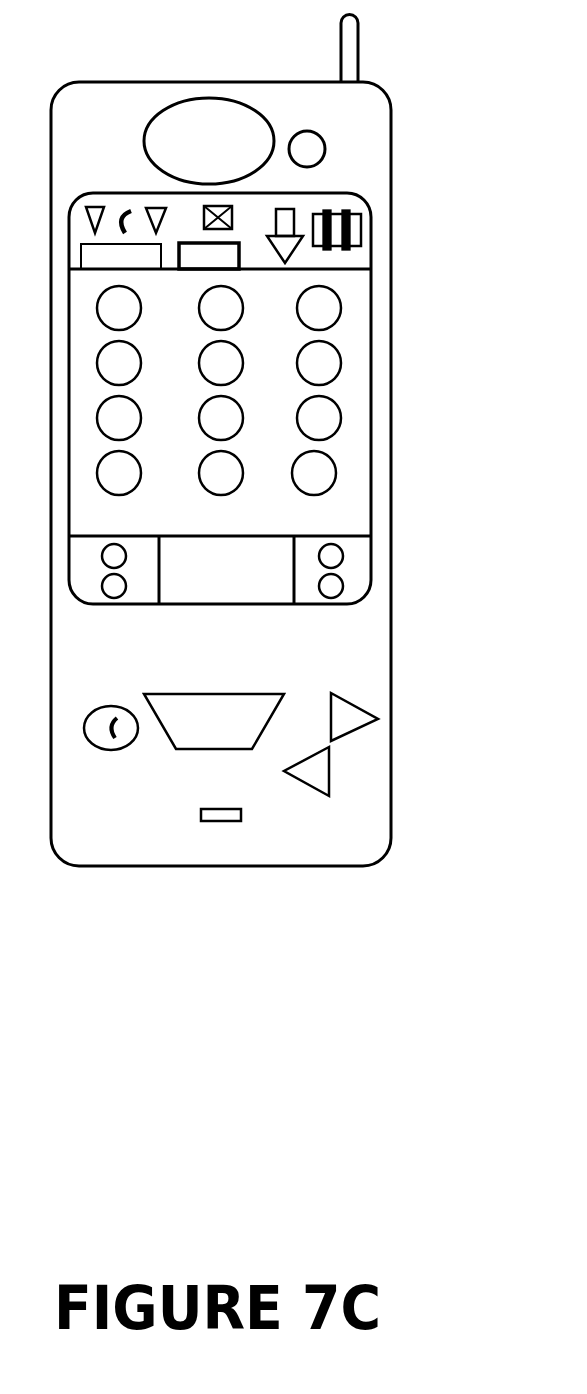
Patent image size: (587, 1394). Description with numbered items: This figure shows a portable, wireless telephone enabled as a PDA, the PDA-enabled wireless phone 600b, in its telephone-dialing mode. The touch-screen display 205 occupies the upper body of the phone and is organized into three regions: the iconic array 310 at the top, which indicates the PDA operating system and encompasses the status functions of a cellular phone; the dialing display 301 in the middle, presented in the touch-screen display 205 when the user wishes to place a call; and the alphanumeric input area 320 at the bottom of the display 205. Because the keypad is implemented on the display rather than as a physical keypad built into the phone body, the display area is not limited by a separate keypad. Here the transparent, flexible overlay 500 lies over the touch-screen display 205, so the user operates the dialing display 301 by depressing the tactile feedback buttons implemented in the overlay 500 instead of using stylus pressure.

The PDA-enabled wireless phone 600b is at (118, 116).
The iconic array 310 is at (341, 200).
The touch-screen display 205 is at (407, 195).
The dialing display 301 is at (243, 529).
The transparent, flexible, overlay 500 is at (317, 494).
The alphanumeric input area 320 is at (248, 584).